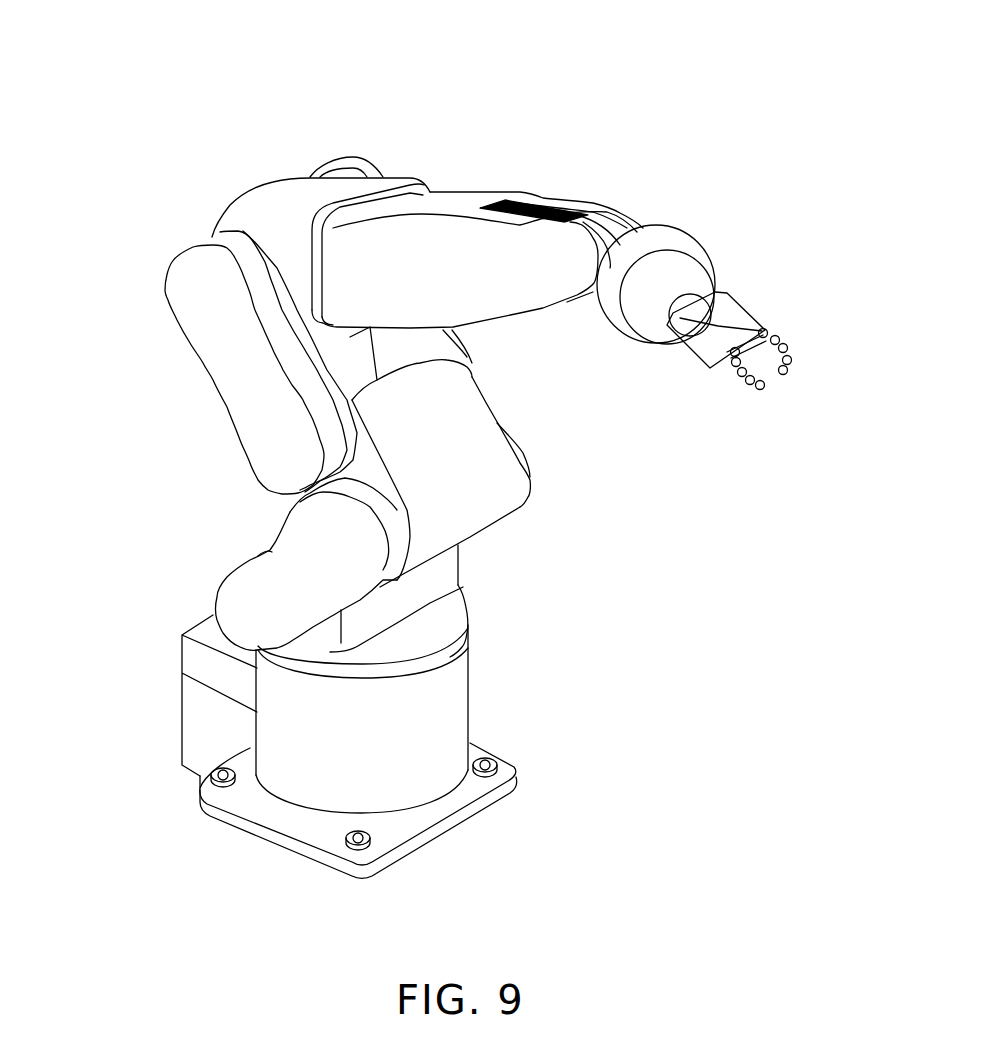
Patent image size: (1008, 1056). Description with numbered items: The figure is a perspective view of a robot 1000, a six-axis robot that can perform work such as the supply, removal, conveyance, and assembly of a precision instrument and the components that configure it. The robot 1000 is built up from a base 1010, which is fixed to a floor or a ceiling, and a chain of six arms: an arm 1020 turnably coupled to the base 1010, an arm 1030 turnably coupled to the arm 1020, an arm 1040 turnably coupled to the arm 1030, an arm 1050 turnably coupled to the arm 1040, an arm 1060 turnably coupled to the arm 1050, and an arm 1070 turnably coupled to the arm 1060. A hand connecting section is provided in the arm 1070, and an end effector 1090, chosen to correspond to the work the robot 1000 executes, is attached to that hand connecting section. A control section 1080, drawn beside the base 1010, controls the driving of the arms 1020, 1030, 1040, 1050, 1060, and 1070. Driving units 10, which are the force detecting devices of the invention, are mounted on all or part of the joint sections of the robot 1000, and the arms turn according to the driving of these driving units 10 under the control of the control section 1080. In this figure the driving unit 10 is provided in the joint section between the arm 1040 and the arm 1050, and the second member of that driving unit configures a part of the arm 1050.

The robot 1000 is at (540, 153).
The driving unit 10 is at (287, 210).
The base 1010 is at (313, 755).
The arm 1020 is at (240, 600).
The arm 1030 is at (427, 493).
The arm 1040 is at (250, 215).
The arm 1050 is at (437, 237).
The arm 1060 is at (650, 245).
The arm 1070 is at (633, 312).
The control section 1080 is at (200, 722).
The end effector 1090 is at (773, 386).